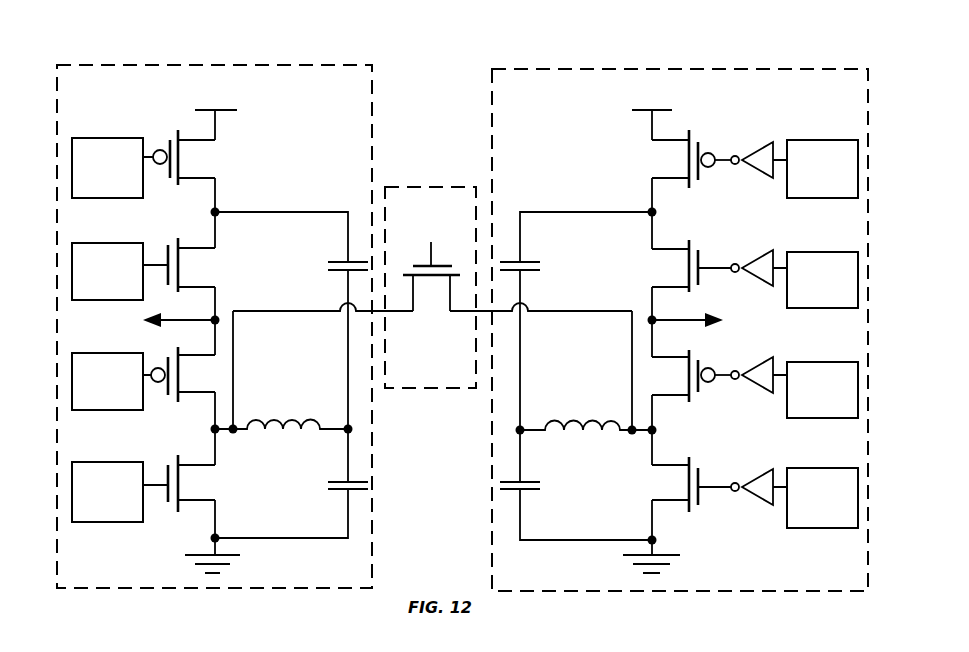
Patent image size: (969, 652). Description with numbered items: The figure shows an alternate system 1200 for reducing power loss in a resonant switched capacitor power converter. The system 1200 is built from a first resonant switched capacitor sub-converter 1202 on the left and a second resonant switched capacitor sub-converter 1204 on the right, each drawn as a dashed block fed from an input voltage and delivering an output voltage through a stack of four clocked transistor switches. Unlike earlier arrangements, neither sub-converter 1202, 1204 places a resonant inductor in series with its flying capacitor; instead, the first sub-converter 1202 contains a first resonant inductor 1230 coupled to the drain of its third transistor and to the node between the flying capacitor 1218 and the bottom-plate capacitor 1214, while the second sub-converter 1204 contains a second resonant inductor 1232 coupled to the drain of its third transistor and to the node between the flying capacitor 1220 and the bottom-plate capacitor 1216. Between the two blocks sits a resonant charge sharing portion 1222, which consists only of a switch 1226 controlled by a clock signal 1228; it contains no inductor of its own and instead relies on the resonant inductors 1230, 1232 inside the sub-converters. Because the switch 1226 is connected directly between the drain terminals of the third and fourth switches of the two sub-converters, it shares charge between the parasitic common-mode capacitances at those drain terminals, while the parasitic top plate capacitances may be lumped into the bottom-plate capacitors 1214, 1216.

The system 1200 is at (118, 45).
The first resonant switched capacitor sub-converter 1202 is at (341, 65).
The second resonant switched capacitor sub-converter 1204 is at (545, 69).
The resonant charge sharing portion 1222 is at (413, 187).
The bottom-plate capacitor 1214 is at (314, 494).
The bottom-plate capacitor 1216 is at (552, 495).
The flying capacitor 1218 is at (324, 282).
The flying capacitor 1220 is at (543, 284).
The switch 1226 is at (431, 311).
The clock signal 1228 is at (431, 233).
The first resonant inductor 1230 is at (290, 400).
The second resonant inductor 1232 is at (576, 401).